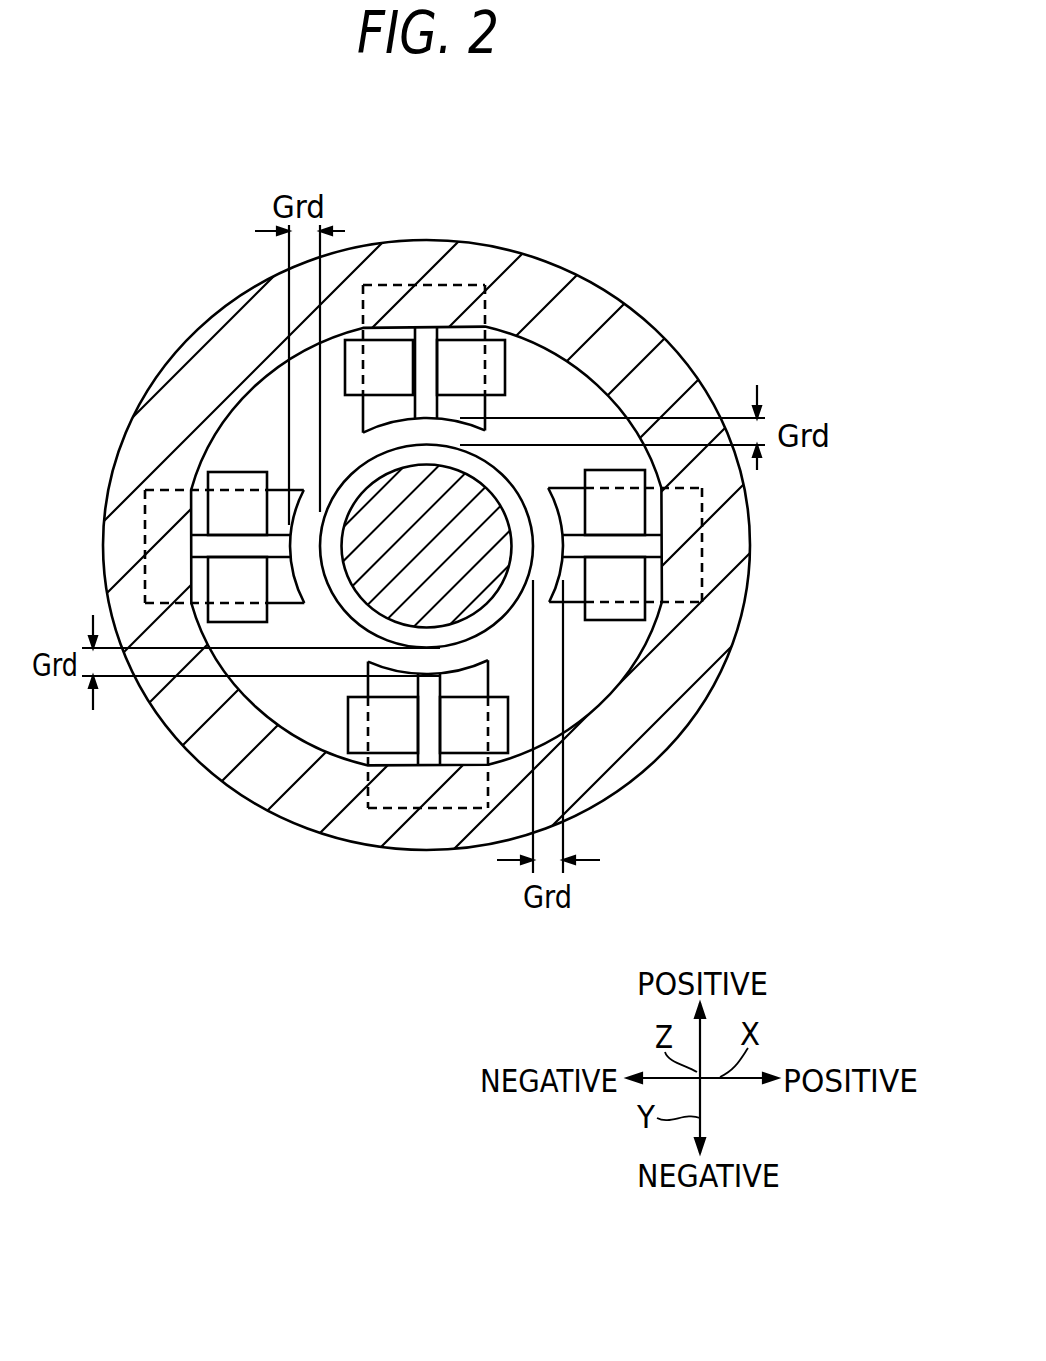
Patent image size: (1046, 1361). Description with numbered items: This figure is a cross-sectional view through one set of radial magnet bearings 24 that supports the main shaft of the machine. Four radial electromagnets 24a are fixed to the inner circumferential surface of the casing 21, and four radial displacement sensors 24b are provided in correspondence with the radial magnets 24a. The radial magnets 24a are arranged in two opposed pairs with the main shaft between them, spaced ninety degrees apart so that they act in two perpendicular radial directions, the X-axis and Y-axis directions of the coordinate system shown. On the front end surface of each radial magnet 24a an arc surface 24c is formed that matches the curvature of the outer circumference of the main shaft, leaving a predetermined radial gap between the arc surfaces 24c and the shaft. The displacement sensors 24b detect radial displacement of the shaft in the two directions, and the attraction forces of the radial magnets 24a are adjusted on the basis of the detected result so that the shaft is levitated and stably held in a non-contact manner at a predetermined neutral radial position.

The casing 21 is at (647, 322).
The radial magnet bearing 24 is at (426, 551).
The radial electromagnet 24a is at (442, 293).
The radial displacement sensor 24b is at (437, 372).
The arc surface 24c is at (549, 523).